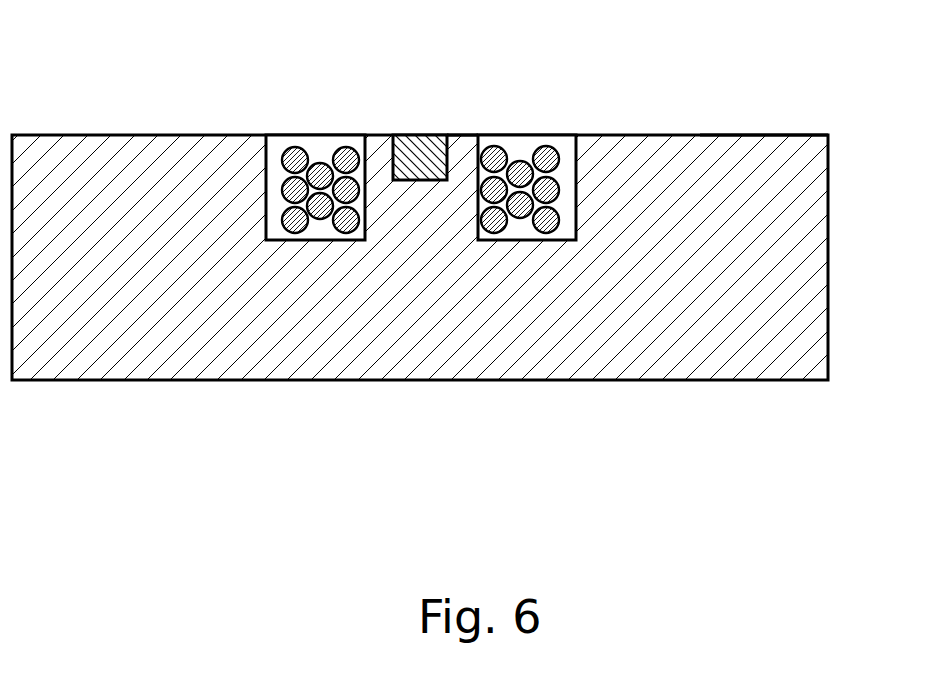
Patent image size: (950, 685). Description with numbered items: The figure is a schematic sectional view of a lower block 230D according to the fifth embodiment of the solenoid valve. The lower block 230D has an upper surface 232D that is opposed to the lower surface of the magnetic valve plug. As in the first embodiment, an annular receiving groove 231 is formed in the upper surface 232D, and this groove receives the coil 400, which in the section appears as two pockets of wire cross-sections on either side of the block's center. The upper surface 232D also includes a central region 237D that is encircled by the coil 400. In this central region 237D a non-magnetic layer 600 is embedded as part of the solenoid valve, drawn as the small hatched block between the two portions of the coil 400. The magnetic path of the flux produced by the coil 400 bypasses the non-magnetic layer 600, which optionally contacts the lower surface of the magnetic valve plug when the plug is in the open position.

The lower block 230D is at (830, 390).
The upper surface 232D is at (773, 135).
The central region 237D is at (465, 135).
The non-magnetic layer 600 is at (420, 135).
The receiving groove 231 is at (276, 158).
The coil 400 is at (565, 163).